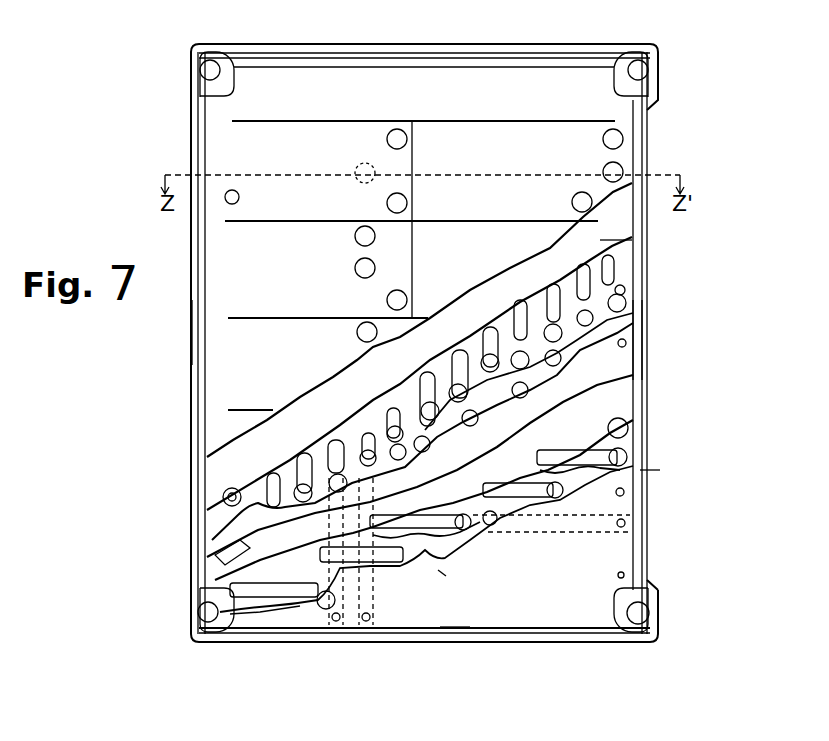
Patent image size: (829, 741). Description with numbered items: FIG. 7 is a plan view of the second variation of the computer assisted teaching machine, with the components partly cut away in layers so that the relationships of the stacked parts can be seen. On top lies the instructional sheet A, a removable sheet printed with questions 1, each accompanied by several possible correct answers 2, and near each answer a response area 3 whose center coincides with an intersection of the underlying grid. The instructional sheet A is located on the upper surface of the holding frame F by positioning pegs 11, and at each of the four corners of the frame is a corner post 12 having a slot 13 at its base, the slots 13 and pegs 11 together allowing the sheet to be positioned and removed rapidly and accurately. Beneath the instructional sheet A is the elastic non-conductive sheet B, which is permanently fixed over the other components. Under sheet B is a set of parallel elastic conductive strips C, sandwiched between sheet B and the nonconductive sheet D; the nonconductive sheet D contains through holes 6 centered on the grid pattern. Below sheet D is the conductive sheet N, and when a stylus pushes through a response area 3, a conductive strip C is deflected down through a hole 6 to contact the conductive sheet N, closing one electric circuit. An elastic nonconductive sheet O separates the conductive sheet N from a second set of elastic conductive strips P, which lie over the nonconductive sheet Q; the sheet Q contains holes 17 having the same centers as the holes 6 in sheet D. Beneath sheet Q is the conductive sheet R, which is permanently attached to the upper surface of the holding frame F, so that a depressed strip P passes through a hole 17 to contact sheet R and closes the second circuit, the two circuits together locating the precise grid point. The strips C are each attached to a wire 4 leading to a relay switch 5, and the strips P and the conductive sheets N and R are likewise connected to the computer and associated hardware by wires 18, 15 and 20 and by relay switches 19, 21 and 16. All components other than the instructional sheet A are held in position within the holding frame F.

The question 1 is at (240, 365).
The possible correct answer 2 is at (550, 195).
The response area 3 is at (620, 170).
The wire 4 is at (352, 655).
The relay switch 5 is at (362, 622).
The through hole 6 is at (612, 323).
The positioning peg 11 is at (230, 502).
The corner post 12 is at (205, 613).
The slot 13 is at (237, 630).
The wire 15 is at (700, 343).
The relay switch 16 is at (650, 338).
The hole 17 is at (556, 475).
The wire 18 is at (655, 495).
The relay switch 19 is at (621, 523).
The wire 20 is at (680, 600).
The relay switch 21 is at (625, 575).
The instructional sheet A is at (238, 101).
The elastic non-conductive sheet B is at (232, 463).
The conductive strip C is at (325, 608).
The nonconductive sheet D is at (628, 248).
The holding frame F is at (453, 632).
The conductive sheet N is at (612, 352).
The elastic nonconductive sheet O is at (608, 383).
The conductive strip P is at (600, 468).
The nonconductive sheet Q is at (218, 556).
The conductive sheet R is at (607, 538).